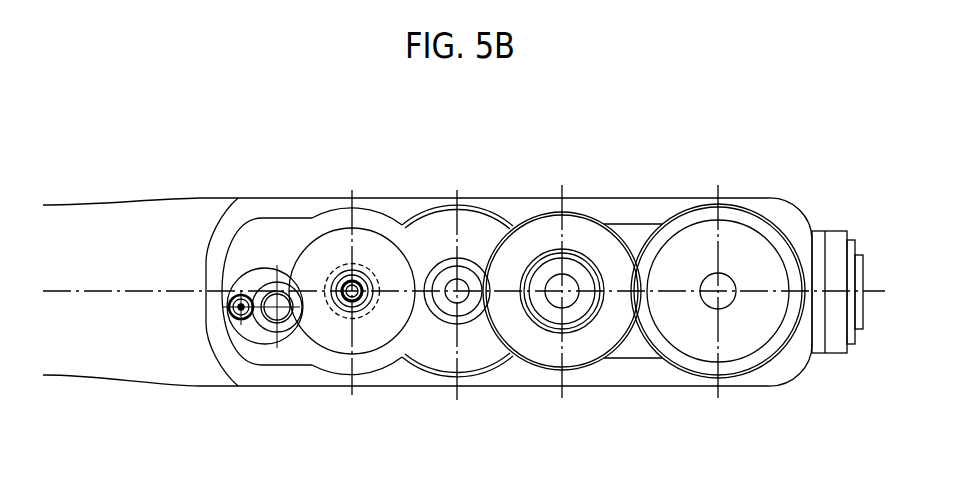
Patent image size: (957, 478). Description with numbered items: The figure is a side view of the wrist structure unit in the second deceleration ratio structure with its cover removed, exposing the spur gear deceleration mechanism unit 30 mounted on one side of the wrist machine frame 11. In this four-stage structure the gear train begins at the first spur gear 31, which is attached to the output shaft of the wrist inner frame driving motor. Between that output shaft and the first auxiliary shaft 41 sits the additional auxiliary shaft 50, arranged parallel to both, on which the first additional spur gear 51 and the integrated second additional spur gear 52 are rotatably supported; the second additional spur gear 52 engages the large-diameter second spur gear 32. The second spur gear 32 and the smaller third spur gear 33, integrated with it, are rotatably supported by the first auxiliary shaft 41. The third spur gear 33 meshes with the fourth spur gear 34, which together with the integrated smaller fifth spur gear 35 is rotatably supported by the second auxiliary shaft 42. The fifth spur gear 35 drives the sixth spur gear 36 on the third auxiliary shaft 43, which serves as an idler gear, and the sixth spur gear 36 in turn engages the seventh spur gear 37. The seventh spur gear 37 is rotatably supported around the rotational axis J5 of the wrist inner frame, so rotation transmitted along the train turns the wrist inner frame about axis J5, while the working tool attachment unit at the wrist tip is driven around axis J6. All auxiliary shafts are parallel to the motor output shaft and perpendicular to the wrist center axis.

The wrist machine frame 11 is at (746, 197).
The spur gear deceleration mechanism unit 30 is at (709, 184).
The first spur gear 31 is at (242, 320).
The second spur gear 32 is at (313, 252).
The third spur gear 33 is at (352, 300).
The fourth spur gear 34 is at (442, 240).
The fifth spur gear 35 is at (447, 320).
The sixth spur gear 36 is at (568, 228).
The seventh spur gear 37 is at (690, 328).
The first auxiliary shaft 41 is at (365, 280).
The second auxiliary shaft 42 is at (473, 281).
The third auxiliary shaft 43 is at (581, 282).
The additional auxiliary shaft 50 is at (262, 273).
The first additional spur gear 51 is at (258, 283).
The second additional spur gear 52 is at (277, 324).
The axis J5 is at (718, 291).
The axis J6 is at (877, 290).